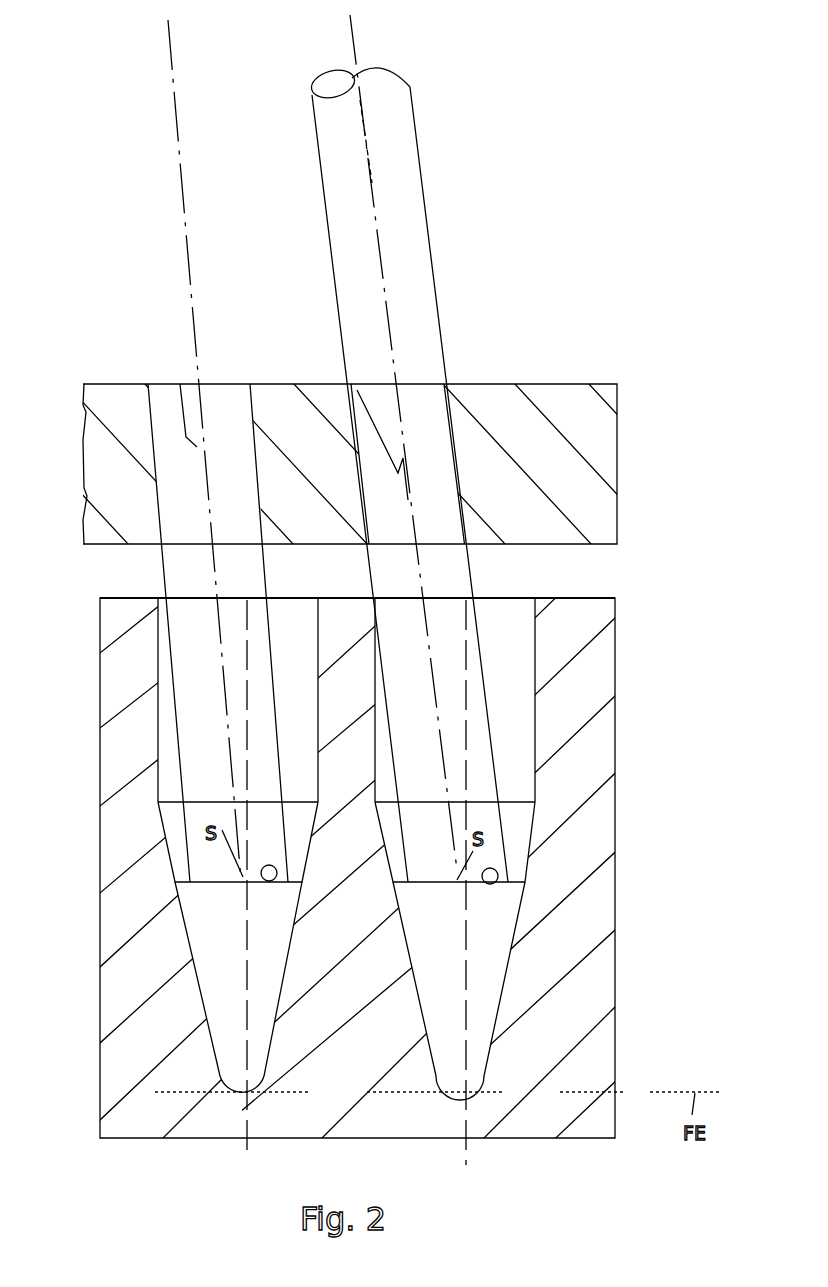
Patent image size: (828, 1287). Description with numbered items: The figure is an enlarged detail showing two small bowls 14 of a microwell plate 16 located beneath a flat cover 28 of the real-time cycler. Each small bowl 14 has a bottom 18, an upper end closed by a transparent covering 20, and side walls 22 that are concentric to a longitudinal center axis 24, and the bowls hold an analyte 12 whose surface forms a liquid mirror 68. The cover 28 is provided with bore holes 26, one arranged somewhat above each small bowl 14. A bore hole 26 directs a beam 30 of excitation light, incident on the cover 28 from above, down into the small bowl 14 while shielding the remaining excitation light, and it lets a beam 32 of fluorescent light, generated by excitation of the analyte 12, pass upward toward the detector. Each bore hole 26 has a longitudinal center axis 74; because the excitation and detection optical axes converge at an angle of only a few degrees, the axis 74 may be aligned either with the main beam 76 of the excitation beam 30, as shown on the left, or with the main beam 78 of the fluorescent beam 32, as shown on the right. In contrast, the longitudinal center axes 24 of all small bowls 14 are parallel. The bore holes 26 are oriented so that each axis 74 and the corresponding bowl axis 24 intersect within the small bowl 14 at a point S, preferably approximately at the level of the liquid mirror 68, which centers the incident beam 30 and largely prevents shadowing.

The main beam of the fluorescent light beam 78 is at (352, 28).
The beam of fluorescent light 32 is at (422, 180).
The flat cover 28 is at (622, 465).
The bore hole 26 is at (226, 400).
The longitudinal center axis of the bore hole 74 is at (180, 380).
The beam of excitation light 30 is at (160, 578).
The main beam of the excitation light beam 76 is at (212, 565).
The transparent covering 20 is at (590, 598).
The microwell plate 16 is at (622, 907).
The small bowl 14 is at (157, 740).
The side wall 22 is at (157, 660).
The analyte 12 is at (350, 979).
The bottom 18 is at (260, 1093).
The longitudinal center axis of the small bowl 24 is at (247, 1135).
The liquid mirror 68 is at (265, 881).